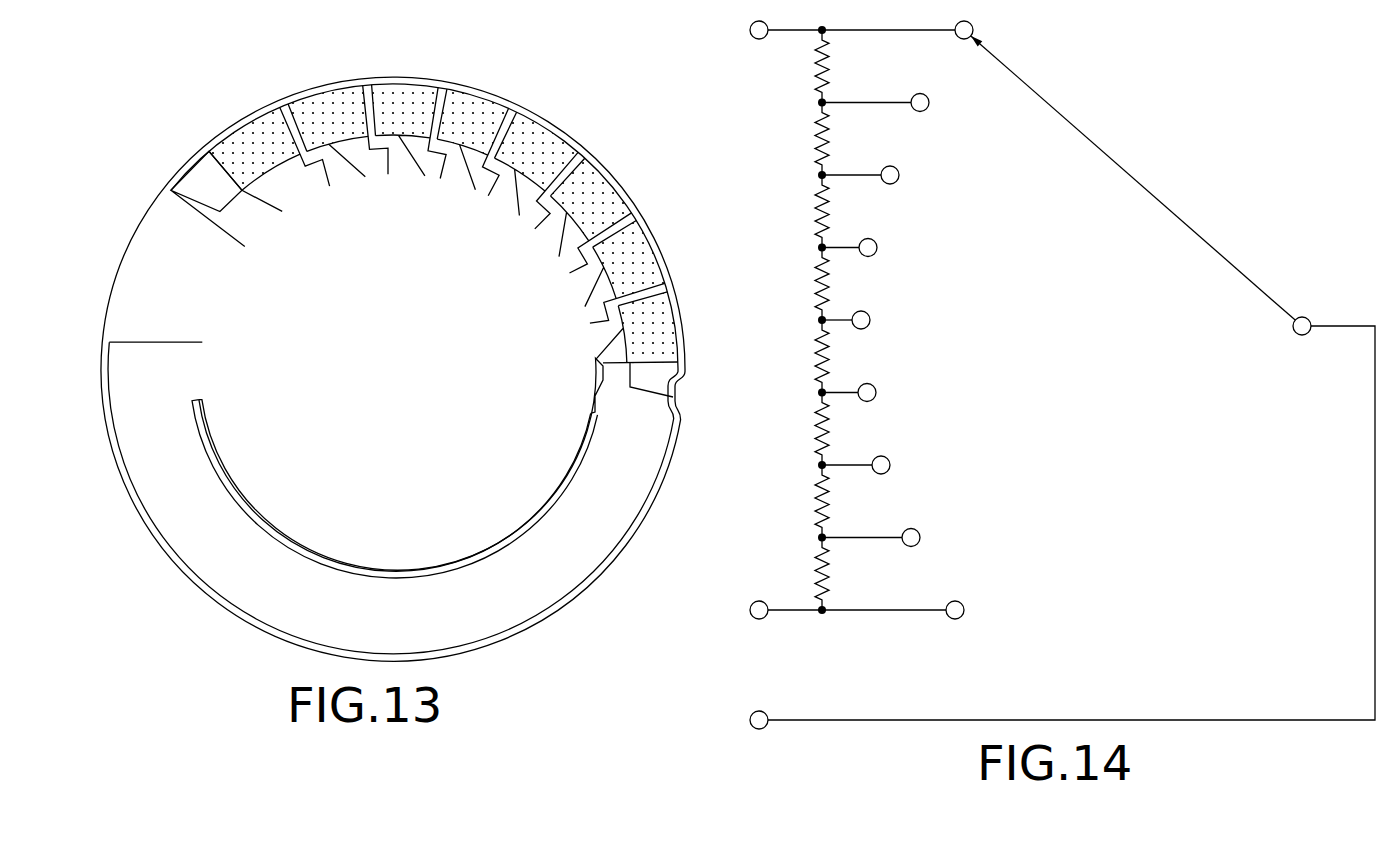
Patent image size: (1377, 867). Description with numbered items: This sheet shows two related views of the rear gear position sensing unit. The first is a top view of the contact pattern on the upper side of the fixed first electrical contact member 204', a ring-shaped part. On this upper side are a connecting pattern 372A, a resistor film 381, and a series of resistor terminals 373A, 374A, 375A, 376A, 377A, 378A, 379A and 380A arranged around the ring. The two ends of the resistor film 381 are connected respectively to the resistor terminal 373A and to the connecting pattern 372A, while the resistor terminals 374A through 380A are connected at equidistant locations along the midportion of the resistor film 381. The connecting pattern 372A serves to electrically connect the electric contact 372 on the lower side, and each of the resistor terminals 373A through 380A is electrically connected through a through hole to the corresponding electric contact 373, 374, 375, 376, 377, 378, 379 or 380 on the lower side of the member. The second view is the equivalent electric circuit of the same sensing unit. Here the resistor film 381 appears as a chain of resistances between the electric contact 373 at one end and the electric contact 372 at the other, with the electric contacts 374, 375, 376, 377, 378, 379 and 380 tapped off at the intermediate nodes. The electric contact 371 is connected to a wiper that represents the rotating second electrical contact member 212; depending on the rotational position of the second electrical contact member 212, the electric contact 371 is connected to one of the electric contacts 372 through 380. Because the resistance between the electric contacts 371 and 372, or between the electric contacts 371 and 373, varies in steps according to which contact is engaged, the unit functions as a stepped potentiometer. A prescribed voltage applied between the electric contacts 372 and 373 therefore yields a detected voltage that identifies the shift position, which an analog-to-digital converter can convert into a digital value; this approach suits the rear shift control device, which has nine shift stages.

In FIG. 13, the first electrical contact member 204' is at (333, 375).
In FIG. 13, the connecting pattern 372A is at (622, 496).
In FIG. 13, the resistor terminal 373A is at (178, 193).
In FIG. 13, the resistor terminal 374A is at (292, 77).
In FIG. 13, the resistor terminal 375A is at (360, 102).
In FIG. 13, the resistor terminal 376A is at (440, 100).
In FIG. 13, the resistor terminal 377A is at (529, 110).
In FIG. 13, the resistor terminal 378A is at (597, 150).
In FIG. 13, the resistor terminal 379A is at (632, 216).
In FIG. 13, the resistor terminal 380A is at (660, 290).
In FIG. 13, the resistor film 381 is at (673, 344).
In FIG. 14, the electric contact 371 is at (748, 721).
In FIG. 14, the electric contact 372 is at (748, 611).
In FIG. 14, the electric contact 373 is at (750, 30).
In FIG. 14, the electric contact 374 is at (929, 103).
In FIG. 14, the electric contact 375 is at (899, 176).
In FIG. 14, the electric contact 376 is at (877, 248).
In FIG. 14, the electric contact 377 is at (870, 321).
In FIG. 14, the electric contact 378 is at (876, 393).
In FIG. 14, the electric contact 379 is at (890, 466).
In FIG. 14, the electric contact 380 is at (920, 539).
In FIG. 14, the second electrical contact member 212 is at (1128, 172).